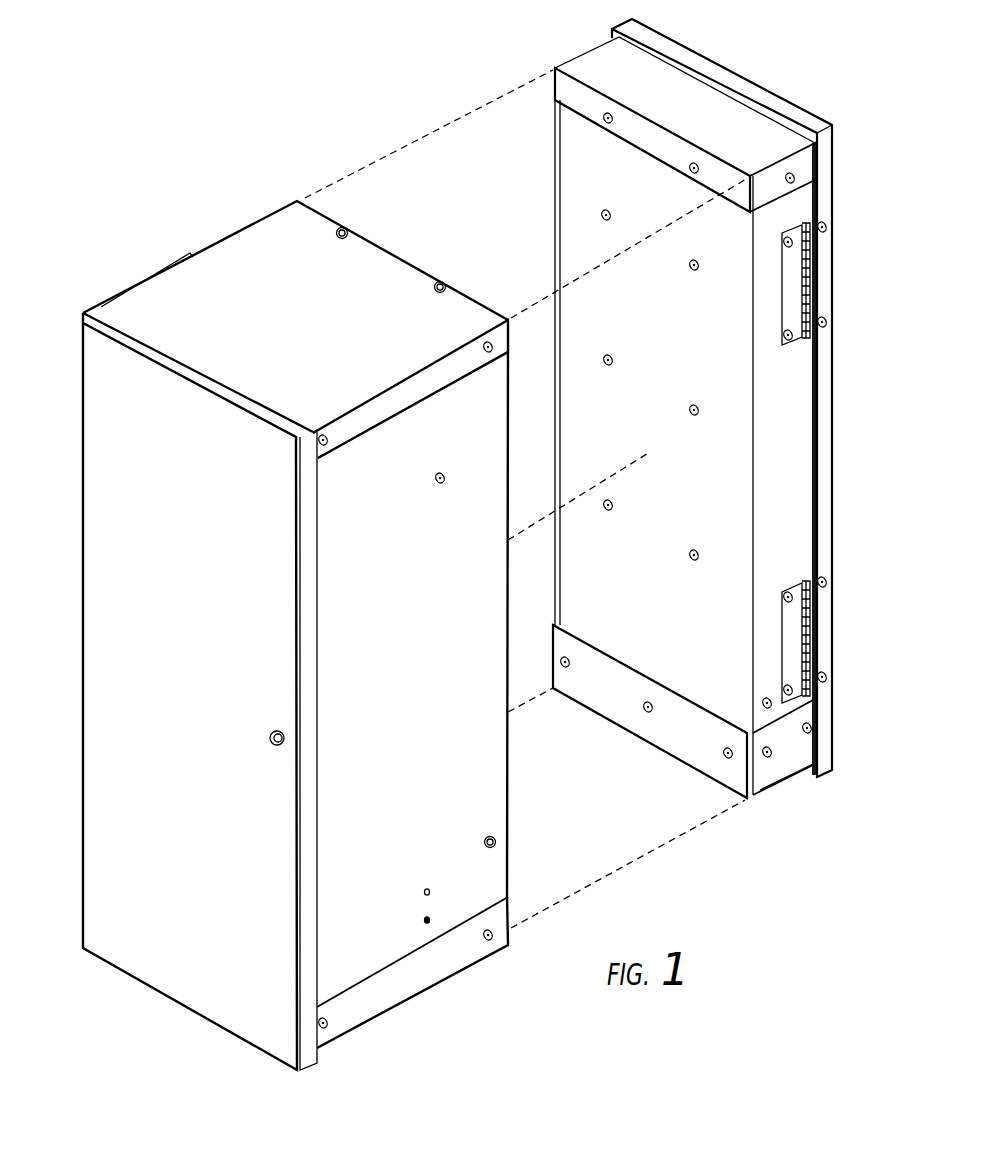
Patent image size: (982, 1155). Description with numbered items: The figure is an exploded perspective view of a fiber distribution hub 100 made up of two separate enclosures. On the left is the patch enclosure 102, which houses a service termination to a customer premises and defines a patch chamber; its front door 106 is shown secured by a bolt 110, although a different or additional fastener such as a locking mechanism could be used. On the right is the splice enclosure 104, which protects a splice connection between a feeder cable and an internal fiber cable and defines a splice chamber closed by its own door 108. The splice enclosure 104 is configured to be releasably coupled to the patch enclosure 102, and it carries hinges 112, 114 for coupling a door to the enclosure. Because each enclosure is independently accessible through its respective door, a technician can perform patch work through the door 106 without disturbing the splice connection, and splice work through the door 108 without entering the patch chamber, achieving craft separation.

The fiber distribution hub 100 is at (208, 162).
The patch enclosure 102 is at (352, 295).
The splice enclosure 104 is at (792, 510).
The door 106 is at (252, 1021).
The door 108 is at (778, 110).
The bolt 110 is at (270, 731).
The hinge 112 is at (803, 280).
The hinge 114 is at (803, 643).